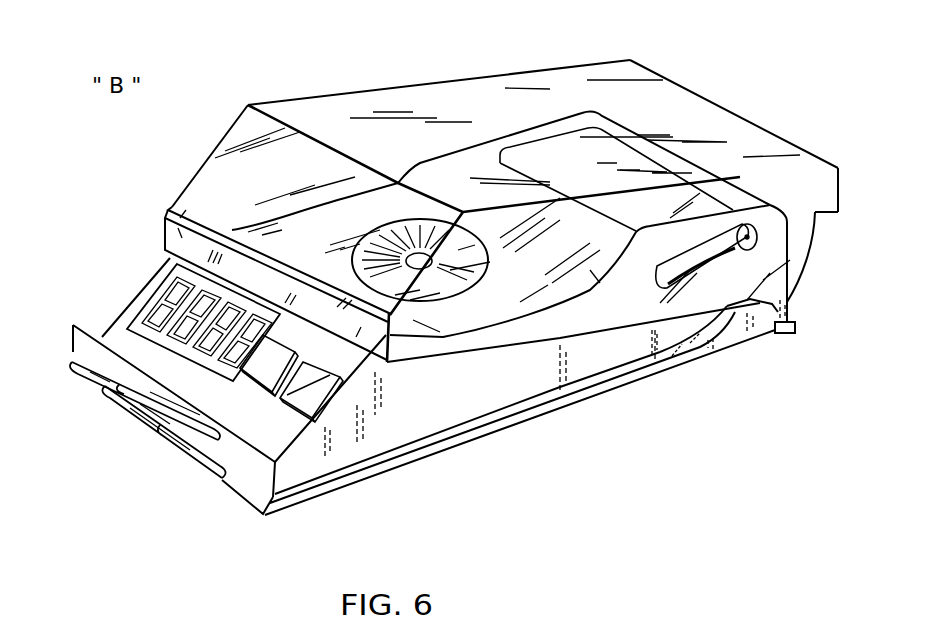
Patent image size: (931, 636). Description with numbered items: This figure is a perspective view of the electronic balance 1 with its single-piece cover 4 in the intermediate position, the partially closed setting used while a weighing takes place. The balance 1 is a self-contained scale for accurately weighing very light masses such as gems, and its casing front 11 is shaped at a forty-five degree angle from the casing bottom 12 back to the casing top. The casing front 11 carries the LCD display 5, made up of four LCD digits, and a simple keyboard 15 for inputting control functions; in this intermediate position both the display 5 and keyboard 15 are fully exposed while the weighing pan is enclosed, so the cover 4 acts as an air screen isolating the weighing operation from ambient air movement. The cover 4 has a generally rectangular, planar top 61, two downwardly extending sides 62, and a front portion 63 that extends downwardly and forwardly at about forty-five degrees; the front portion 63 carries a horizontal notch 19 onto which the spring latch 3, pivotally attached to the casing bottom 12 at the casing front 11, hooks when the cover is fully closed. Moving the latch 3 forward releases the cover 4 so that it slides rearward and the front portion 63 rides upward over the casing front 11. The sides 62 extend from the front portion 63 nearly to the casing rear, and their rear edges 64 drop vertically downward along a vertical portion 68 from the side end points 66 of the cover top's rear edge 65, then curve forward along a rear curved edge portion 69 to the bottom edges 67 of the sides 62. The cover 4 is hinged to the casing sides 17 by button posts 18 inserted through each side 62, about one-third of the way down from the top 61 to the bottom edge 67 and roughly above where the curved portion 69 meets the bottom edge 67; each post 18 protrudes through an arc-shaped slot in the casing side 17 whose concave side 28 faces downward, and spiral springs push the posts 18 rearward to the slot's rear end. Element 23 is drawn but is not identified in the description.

The electronic balance 1 is at (798, 54).
The spring latch 3 is at (248, 470).
The cover 4 is at (404, 56).
The LCD display 5 is at (126, 266).
The casing front 11 is at (78, 450).
The casing bottom 12 is at (292, 505).
The keyboard 15 is at (287, 410).
The casing sides 17 is at (452, 406).
The button posts 18 is at (743, 250).
The horizontal notch 19 is at (168, 207).
The bracket 23 is at (724, 340).
The concave sides 28 is at (727, 255).
The top 61 is at (487, 85).
The sides 62 is at (630, 296).
The front portion 63 is at (290, 176).
The rear edges 64 is at (835, 251).
The rear edge 65 is at (700, 95).
The side end points 66 is at (840, 168).
The bottom edges 67 is at (627, 330).
The vertical portion 68 is at (841, 190).
The rear curved edge portion 69 is at (805, 266).